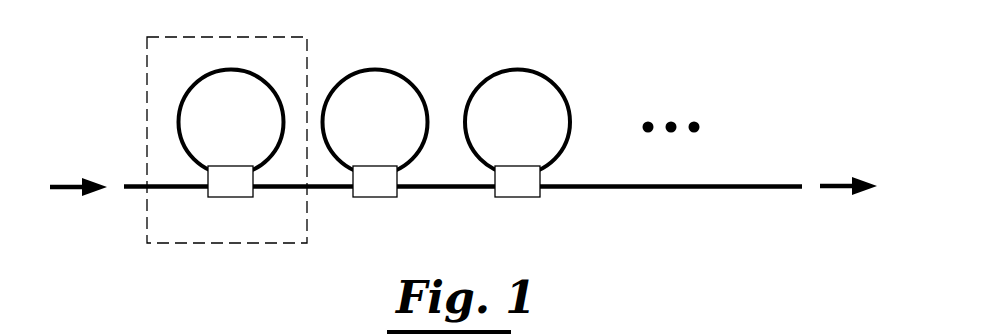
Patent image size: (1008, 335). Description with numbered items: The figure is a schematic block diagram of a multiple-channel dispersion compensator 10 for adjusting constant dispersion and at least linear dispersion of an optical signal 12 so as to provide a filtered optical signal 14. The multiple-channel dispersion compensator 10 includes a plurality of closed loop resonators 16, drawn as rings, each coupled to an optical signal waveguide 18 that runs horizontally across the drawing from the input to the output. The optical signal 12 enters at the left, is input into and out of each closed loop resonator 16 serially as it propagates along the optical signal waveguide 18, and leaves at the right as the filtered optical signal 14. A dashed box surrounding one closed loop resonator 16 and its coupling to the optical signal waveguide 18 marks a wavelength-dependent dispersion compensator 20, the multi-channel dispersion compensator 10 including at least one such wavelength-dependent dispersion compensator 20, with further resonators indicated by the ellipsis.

The multiple-channel dispersion compensator 10 is at (659, 45).
The optical signal 12 is at (64, 180).
The filtered optical signal 14 is at (838, 178).
The closed loop resonator 16 is at (226, 66).
The optical signal waveguide 18 is at (622, 192).
The wavelength-dependent dispersion compensator 20 is at (206, 247).